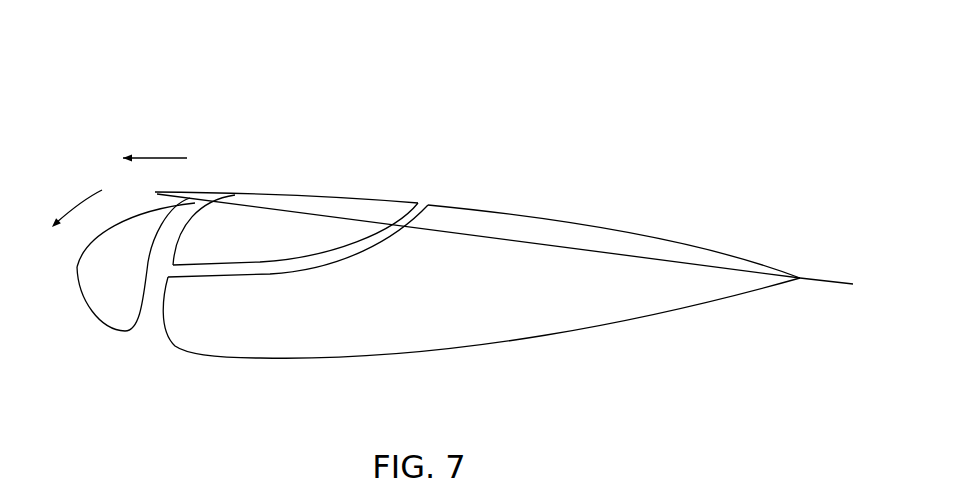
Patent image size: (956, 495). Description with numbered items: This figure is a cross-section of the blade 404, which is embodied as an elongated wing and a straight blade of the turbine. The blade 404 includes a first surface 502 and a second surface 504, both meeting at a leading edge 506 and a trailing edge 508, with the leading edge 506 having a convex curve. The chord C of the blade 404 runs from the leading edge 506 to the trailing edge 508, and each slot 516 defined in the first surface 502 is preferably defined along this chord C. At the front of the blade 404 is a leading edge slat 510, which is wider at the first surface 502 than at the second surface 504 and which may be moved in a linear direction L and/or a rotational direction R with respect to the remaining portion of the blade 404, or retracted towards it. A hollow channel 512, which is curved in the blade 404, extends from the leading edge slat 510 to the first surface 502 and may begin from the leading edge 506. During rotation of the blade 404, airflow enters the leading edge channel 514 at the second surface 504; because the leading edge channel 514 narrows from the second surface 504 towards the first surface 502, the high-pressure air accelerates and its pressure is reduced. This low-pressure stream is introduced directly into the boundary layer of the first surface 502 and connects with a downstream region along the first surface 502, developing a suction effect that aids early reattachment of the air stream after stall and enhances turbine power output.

The blade 404 is at (148, 43).
The linear direction L is at (155, 158).
The rotational direction R is at (80, 198).
The chord C is at (673, 259).
The first surface 502 is at (575, 222).
The second surface 504 is at (612, 323).
The leading edge 506 is at (75, 277).
The trailing edge 508 is at (800, 278).
The leading edge slat 510 is at (118, 318).
The hollow channel 512 is at (288, 258).
The leading edge channel 514 is at (186, 219).
The slot 516 is at (427, 197).